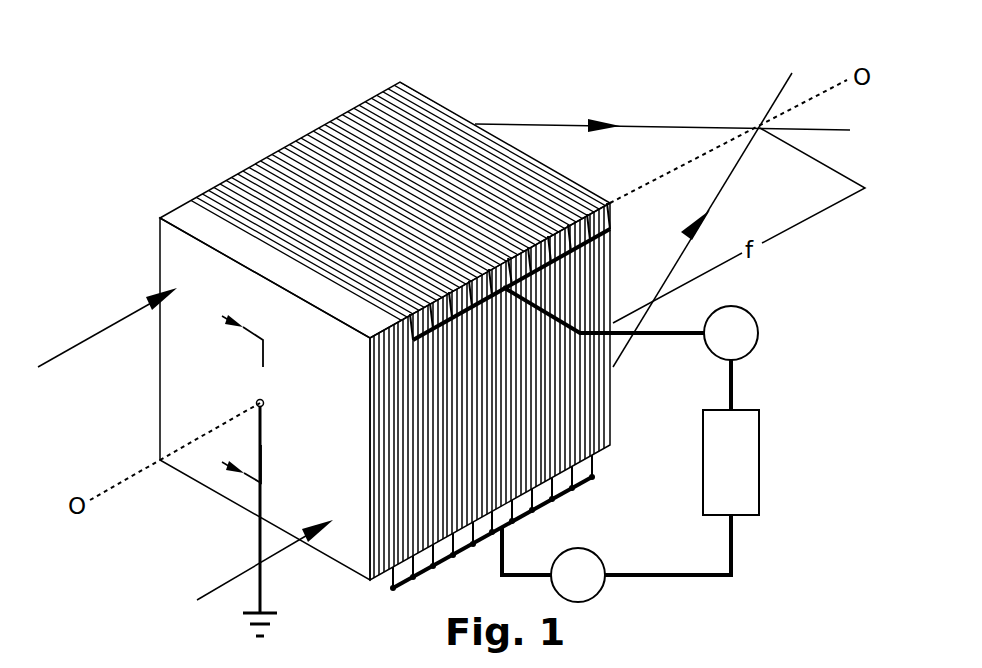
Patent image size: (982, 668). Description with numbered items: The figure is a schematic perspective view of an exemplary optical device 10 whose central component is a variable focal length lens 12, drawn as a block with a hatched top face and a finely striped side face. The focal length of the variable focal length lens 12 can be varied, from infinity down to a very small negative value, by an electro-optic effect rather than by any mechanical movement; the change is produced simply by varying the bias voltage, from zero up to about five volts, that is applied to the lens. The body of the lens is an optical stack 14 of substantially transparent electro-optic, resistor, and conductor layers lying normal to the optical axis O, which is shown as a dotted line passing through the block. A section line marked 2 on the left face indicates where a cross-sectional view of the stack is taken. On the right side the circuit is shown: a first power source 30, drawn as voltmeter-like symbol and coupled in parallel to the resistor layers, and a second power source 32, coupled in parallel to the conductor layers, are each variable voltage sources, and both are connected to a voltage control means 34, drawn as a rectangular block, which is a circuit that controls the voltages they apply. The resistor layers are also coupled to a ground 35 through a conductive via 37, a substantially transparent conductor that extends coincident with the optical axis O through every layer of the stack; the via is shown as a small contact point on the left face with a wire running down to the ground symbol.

The optical device 10 is at (206, 62).
The variable focal length lens 12 is at (372, 50).
The optical stack 14 is at (200, 142).
The section line 2- 2 is at (231, 392).
The conductive via 37 is at (256, 400).
The ground 35 is at (249, 612).
The first power source 30 is at (604, 561).
The second power source 32 is at (756, 319).
The voltage control means 34 is at (759, 461).